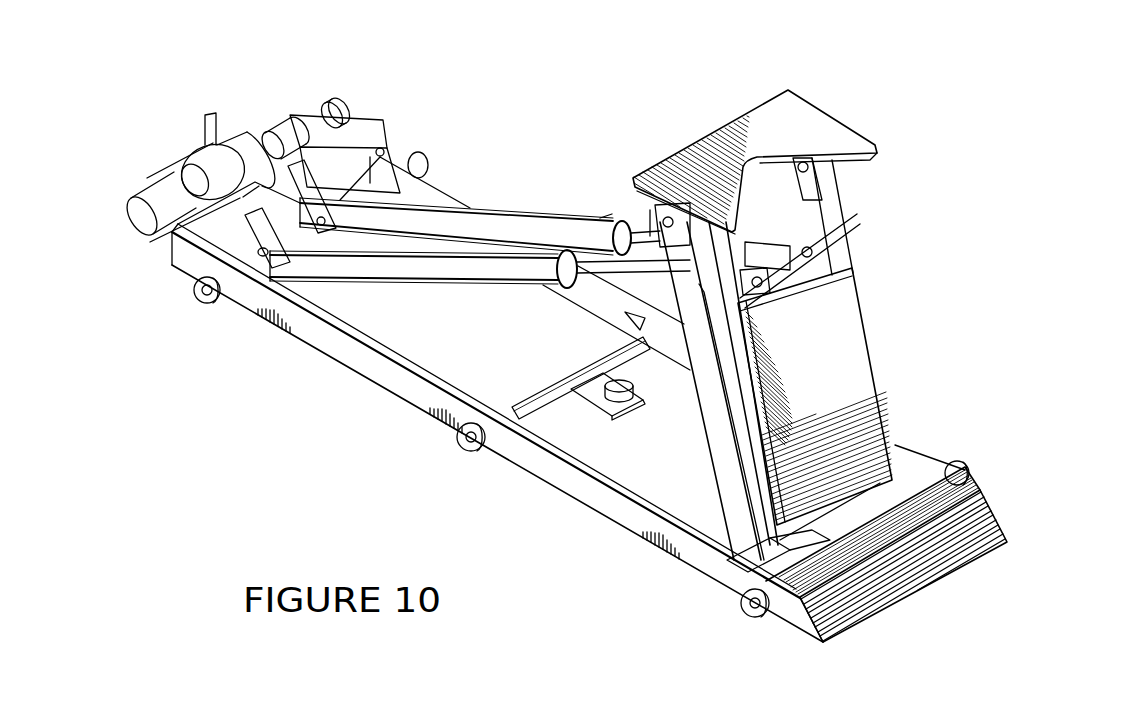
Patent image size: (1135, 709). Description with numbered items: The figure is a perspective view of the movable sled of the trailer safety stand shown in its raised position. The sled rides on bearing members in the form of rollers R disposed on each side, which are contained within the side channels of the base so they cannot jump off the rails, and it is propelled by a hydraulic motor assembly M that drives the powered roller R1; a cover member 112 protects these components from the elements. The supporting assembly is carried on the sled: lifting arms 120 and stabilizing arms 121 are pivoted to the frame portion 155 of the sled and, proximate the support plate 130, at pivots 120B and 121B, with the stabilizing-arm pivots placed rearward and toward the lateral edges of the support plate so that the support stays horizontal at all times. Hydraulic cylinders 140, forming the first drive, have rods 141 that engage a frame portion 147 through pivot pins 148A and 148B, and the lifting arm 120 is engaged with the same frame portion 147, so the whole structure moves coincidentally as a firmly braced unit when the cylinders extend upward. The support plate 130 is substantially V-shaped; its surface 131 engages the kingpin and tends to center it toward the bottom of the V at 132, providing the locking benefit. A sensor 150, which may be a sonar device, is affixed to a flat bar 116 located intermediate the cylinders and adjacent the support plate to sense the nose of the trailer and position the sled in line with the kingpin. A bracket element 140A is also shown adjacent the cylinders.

The cover member 112 is at (357, 155).
The flat bar 116 is at (528, 403).
The lifting arm 120 is at (760, 500).
The pivot 120B is at (718, 228).
The stabilizing arm 121 is at (717, 440).
The pivot 121B is at (593, 220).
The support plate 130 is at (813, 122).
The surface 131 is at (870, 155).
The bottom of the V 132 is at (700, 150).
The cylinder 140 is at (487, 220).
The cylinder bracket 140A is at (258, 257).
The rod 141 is at (598, 273).
The frame portion 147 is at (843, 390).
The pivot pin 148A is at (757, 282).
The pivot pin 148B is at (813, 253).
The sensor 150 is at (580, 416).
The frame portion 155 is at (387, 380).
The hydraulic motor assembly M is at (285, 137).
The roller R is at (210, 305).
The powered roller R1 is at (340, 100).